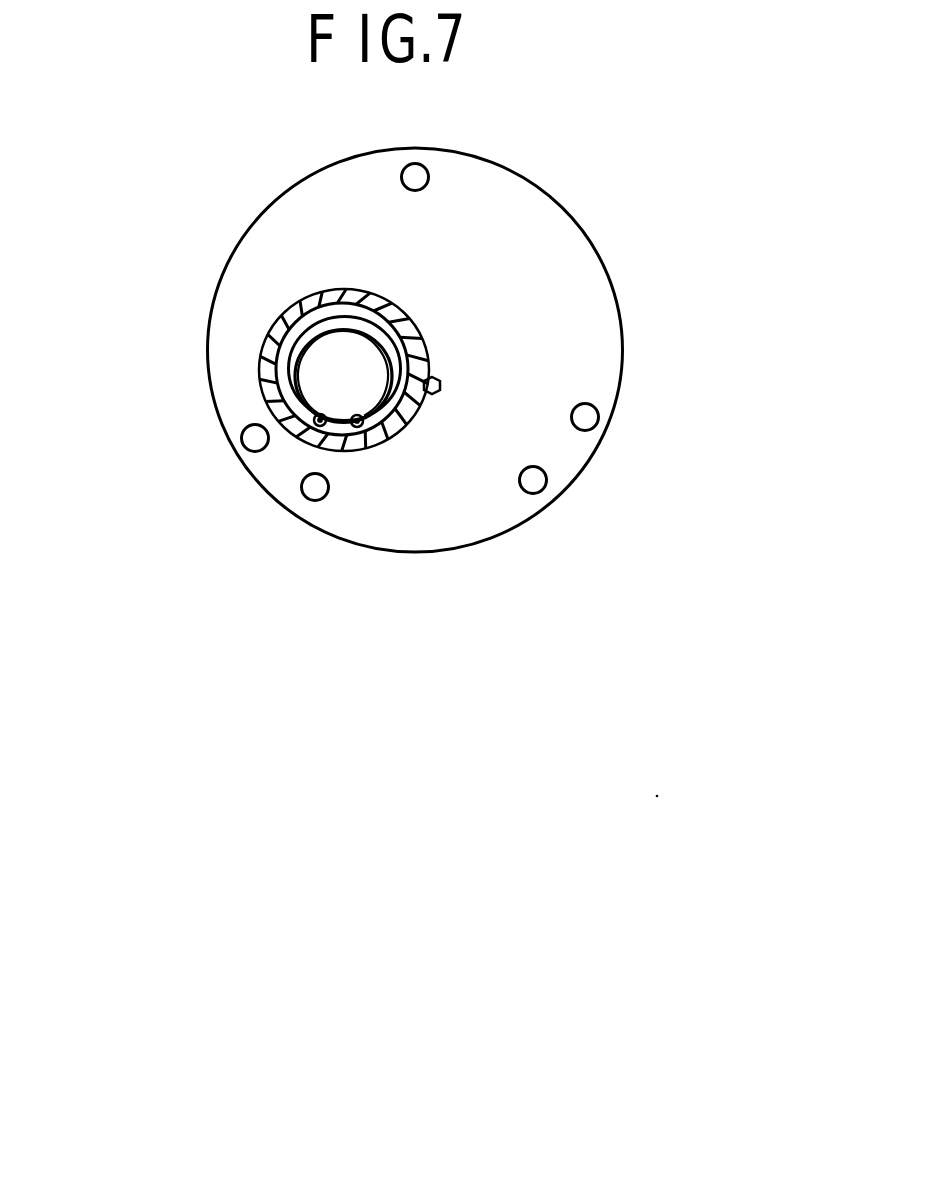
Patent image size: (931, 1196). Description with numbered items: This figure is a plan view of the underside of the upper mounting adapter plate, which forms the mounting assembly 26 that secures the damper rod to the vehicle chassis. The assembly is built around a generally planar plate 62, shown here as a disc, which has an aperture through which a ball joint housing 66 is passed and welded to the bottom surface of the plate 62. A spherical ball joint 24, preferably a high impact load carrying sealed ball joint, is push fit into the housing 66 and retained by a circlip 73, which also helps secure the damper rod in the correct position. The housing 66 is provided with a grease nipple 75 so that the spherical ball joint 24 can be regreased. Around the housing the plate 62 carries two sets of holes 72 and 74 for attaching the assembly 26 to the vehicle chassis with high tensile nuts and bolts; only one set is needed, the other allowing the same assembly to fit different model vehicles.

The spherical ball joint 24 is at (318, 352).
The mounting assembly 26 is at (392, 782).
The plate 62 is at (330, 548).
The ball joint housing 66 is at (406, 310).
The holes 72 is at (557, 423).
The circlip 73 is at (401, 351).
The holes 74 is at (342, 494).
The grease nipple 75 is at (436, 413).